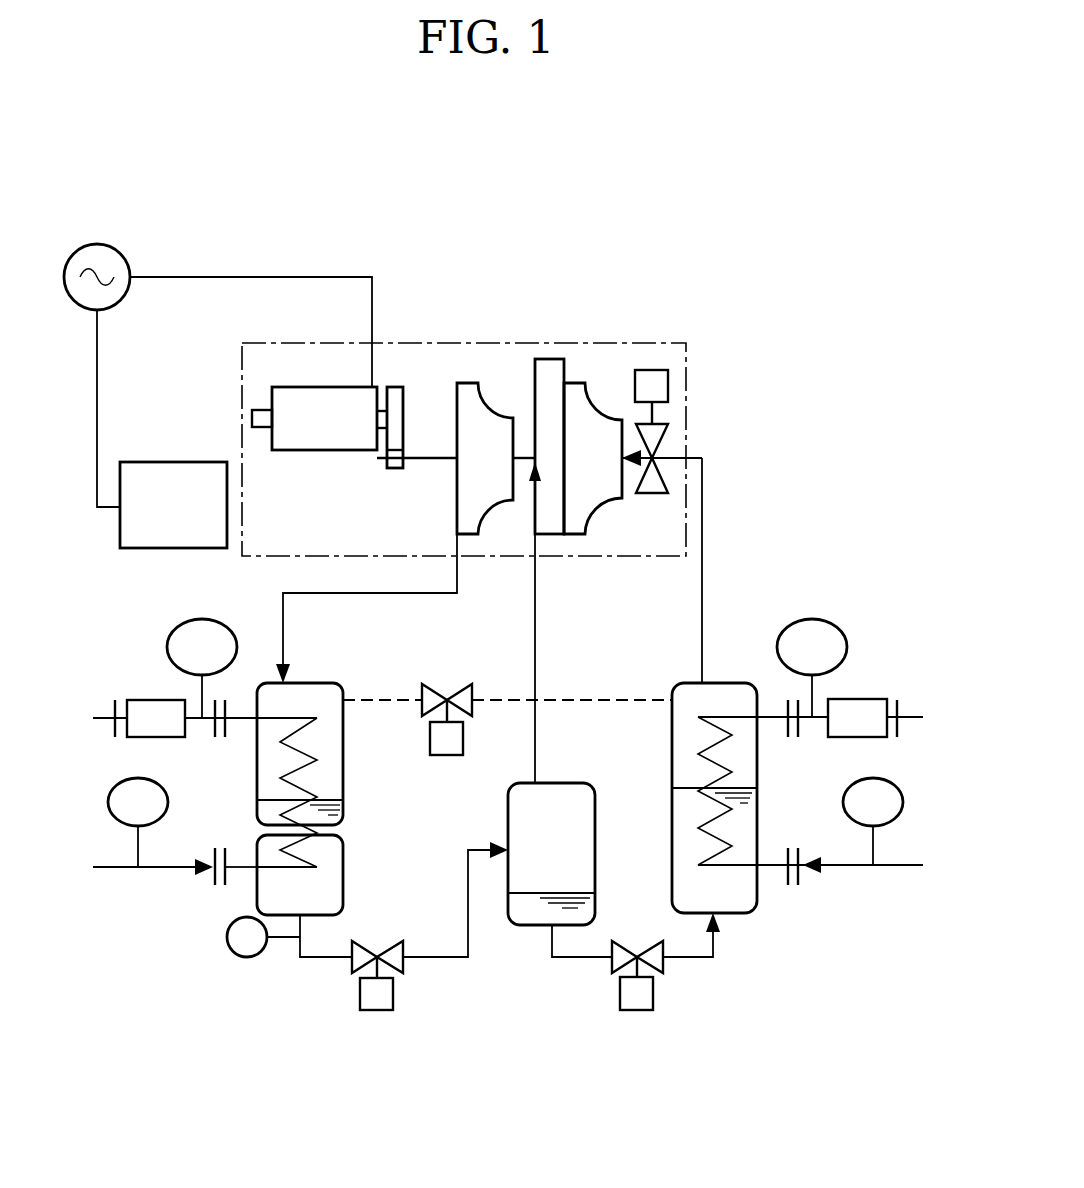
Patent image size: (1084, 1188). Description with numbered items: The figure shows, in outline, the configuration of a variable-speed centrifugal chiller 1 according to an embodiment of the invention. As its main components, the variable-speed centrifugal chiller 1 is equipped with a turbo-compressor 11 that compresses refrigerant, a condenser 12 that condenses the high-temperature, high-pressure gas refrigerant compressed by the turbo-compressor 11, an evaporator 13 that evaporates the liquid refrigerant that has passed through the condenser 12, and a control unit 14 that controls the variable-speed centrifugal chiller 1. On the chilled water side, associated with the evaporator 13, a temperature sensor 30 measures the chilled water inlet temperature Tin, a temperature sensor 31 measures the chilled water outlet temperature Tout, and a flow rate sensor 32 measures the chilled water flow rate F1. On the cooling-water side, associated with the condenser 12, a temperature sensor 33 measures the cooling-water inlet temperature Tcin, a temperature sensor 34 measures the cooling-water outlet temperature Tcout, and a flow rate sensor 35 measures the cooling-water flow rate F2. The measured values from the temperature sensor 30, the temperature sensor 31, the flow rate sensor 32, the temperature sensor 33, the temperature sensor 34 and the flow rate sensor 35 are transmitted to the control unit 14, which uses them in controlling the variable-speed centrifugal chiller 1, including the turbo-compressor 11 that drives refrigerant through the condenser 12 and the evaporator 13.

The variable-speed centrifugal chiller 1 is at (320, 168).
The turbo-compressor 11 is at (487, 341).
The condenser 12 is at (343, 781).
The evaporator 13 is at (725, 682).
The control unit 14 is at (178, 462).
The temperature sensor 30 is at (843, 800).
The temperature sensor 31 is at (808, 618).
The flow rate sensor 32 is at (872, 699).
The temperature sensor 33 is at (168, 801).
The temperature sensor 34 is at (197, 618).
The flow rate sensor 35 is at (140, 700).